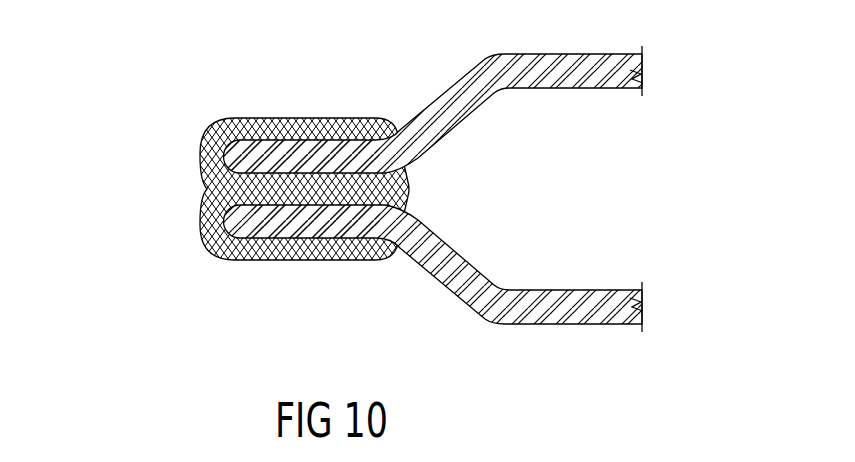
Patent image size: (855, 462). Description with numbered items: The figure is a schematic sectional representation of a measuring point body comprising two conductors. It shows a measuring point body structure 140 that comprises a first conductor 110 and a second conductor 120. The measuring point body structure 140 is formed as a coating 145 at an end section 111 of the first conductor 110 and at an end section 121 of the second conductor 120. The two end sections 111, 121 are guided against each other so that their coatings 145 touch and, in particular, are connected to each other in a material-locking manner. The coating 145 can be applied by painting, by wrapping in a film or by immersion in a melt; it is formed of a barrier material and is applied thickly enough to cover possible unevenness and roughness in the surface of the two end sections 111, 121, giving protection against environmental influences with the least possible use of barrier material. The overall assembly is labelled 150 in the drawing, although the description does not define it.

The first conductor 110 is at (643, 67).
The end section of the first conductor 111 is at (328, 148).
The second conductor 120 is at (643, 303).
The end section of the second conductor 121 is at (302, 228).
The measuring point body structure 140 is at (312, 119).
The coating 145 is at (243, 118).
The connection assembly 150 is at (402, 182).